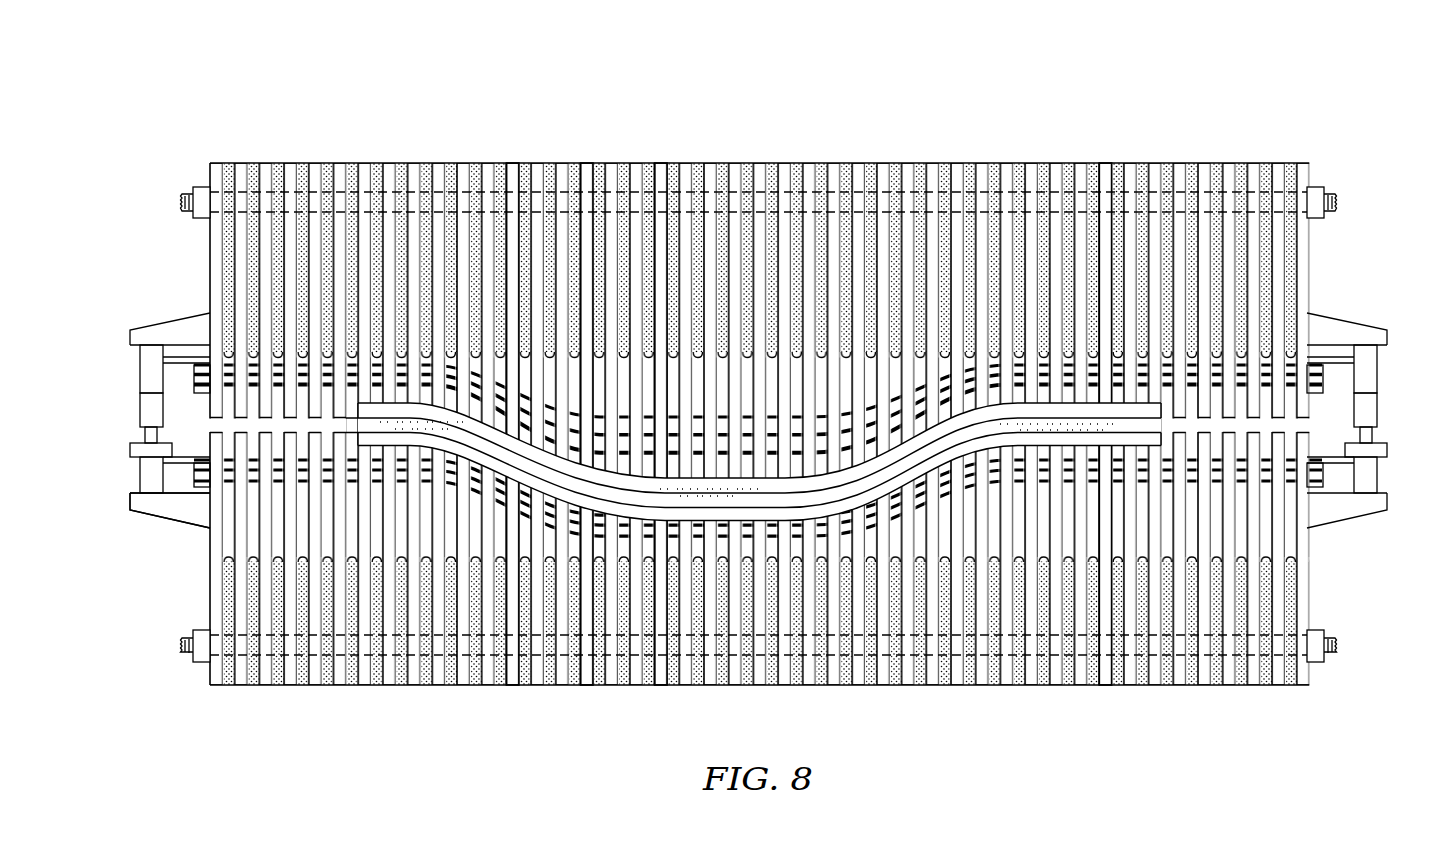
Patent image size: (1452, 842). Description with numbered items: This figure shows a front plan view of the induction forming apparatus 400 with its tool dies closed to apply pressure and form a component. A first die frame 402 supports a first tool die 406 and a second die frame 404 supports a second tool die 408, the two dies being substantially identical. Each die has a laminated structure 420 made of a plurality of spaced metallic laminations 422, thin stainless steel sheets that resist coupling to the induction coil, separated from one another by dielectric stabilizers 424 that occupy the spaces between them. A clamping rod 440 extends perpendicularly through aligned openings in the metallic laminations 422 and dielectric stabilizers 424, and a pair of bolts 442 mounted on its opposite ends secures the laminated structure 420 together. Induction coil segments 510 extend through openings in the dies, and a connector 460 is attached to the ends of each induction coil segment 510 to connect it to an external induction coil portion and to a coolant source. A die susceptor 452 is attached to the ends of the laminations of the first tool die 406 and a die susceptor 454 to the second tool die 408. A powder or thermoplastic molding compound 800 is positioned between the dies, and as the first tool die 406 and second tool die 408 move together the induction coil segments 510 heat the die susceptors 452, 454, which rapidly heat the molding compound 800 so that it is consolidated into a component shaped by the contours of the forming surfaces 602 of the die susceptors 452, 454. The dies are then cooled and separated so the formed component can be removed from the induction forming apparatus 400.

The induction forming apparatus 400 is at (758, 396).
The first die frame 402 is at (758, 400).
The second die frame 404 is at (158, 518).
The first tool die 406 is at (438, 143).
The second tool die 408 is at (411, 702).
The laminated structure 420 is at (1095, 160).
The metallic lamination 422 is at (660, 686).
The dielectric stabilizer 424 is at (1037, 686).
The clamping rod 440 is at (1252, 660).
The bolt 442 is at (1317, 663).
The die susceptor 452 is at (407, 400).
The die susceptor 454 is at (405, 448).
The connector 460 is at (139, 376).
The induction coil segment 510 is at (1313, 490).
The forming surface 602 is at (1142, 430).
The powder or thermoplastic molding compound 800 is at (749, 425).